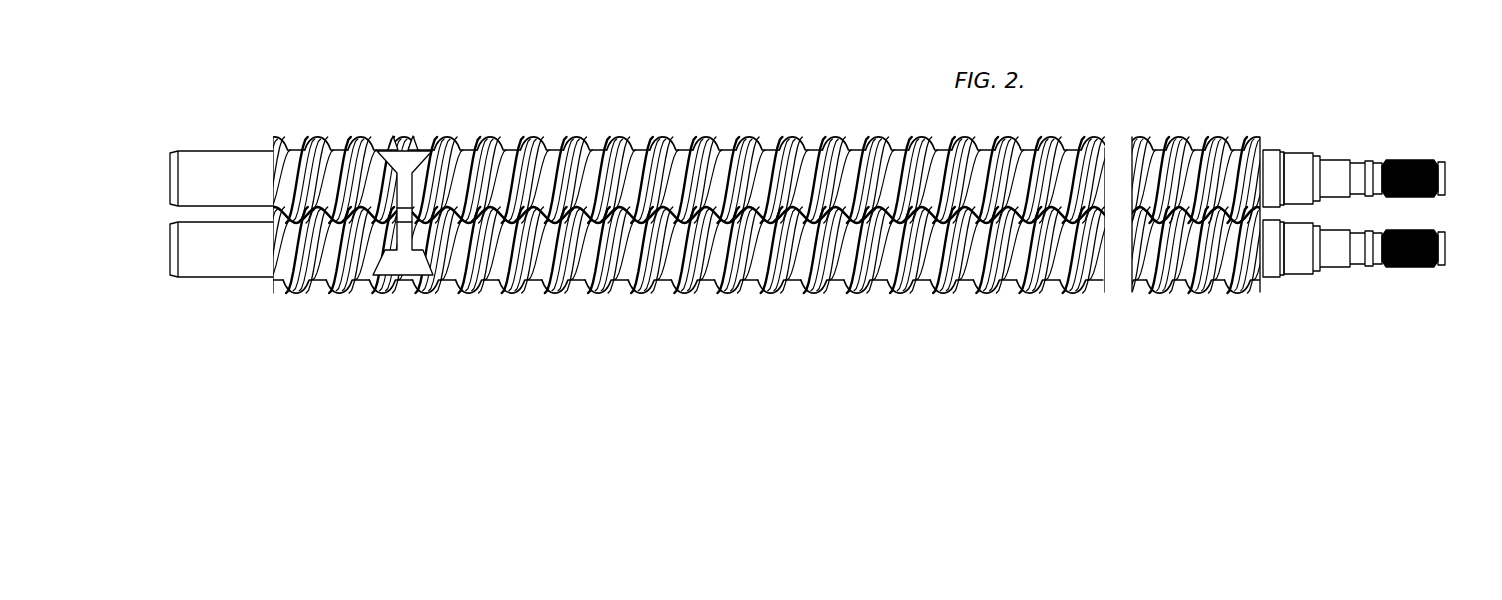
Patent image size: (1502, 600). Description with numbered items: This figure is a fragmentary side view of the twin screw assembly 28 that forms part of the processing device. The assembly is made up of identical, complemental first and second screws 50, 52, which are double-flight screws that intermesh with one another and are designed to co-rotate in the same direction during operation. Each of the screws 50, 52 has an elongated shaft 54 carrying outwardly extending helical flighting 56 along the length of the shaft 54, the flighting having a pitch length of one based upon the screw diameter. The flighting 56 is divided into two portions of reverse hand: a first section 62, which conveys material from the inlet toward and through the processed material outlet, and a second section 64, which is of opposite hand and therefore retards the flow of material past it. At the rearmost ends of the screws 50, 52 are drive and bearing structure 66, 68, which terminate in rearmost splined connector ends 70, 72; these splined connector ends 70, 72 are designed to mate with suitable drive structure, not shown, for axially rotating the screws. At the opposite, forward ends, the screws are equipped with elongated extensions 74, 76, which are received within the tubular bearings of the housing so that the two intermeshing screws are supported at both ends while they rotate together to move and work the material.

The twin screw assembly 28 is at (1240, 115).
The first screw 50 is at (671, 286).
The second screw 52 is at (693, 143).
The shaft 54 is at (676, 215).
The helical flighting 56 is at (684, 215).
The first section 62 is at (684, 217).
The second section 64 is at (403, 205).
The drive and bearing structure 66 is at (1273, 270).
The drive and bearing structure 68 is at (1272, 160).
The splined connector end 70 is at (1413, 268).
The splined connector end 72 is at (1417, 160).
The elongated extension 74 is at (203, 262).
The elongated extension 76 is at (212, 177).